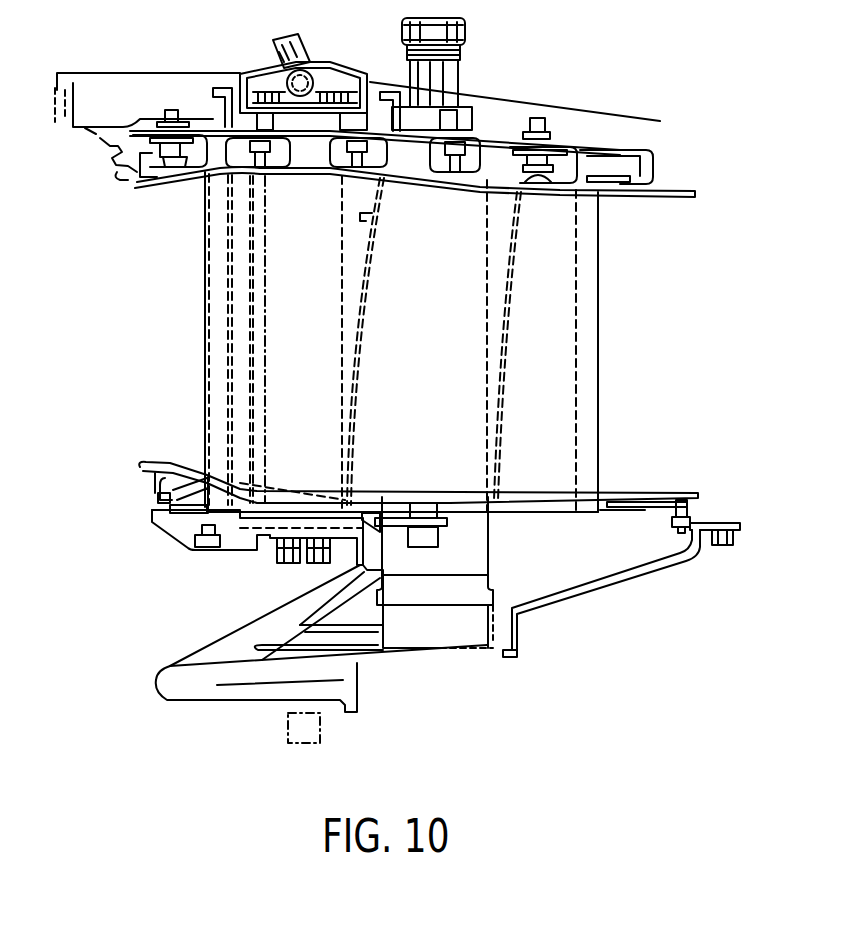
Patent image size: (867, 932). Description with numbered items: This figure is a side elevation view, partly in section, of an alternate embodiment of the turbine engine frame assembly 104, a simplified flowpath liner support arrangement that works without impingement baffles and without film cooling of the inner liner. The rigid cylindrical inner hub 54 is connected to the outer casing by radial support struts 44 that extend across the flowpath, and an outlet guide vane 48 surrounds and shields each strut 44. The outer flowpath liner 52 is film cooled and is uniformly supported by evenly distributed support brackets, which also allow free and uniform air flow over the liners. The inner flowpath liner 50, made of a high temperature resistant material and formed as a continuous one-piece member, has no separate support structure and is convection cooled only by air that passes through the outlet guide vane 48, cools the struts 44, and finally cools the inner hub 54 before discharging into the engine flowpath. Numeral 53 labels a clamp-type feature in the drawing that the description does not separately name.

The radial support struts 44 is at (440, 365).
The outlet guide vane 48 is at (218, 328).
The inner flowpath liner 50 is at (553, 484).
The outer flowpath liner 52 is at (276, 176).
The clamp assemblies 53 is at (478, 144).
The inner hub 54 is at (360, 565).
The turbine engine frame assembly 104 is at (626, 264).